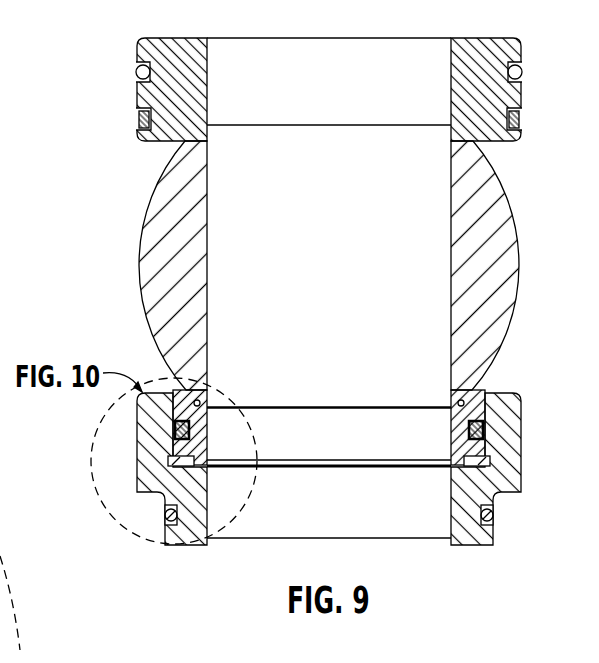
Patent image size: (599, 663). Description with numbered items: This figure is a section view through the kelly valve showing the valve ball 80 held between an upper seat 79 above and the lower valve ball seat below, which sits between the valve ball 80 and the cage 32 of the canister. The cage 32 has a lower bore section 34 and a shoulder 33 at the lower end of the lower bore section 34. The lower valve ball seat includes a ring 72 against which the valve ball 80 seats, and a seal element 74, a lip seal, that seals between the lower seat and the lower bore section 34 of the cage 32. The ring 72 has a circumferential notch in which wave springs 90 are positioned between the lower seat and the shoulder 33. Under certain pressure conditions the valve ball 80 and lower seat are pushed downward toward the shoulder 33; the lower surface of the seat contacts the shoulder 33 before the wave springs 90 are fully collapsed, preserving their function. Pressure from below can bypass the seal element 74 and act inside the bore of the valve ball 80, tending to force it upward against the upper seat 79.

The upper seat 79 is at (500, 102).
The valve ball 80 is at (508, 247).
The ring 72 is at (288, 423).
The seal element 74 is at (483, 432).
The cage 32 is at (316, 472).
The shoulder 33 is at (168, 493).
The lower bore section 34 is at (173, 400).
The wave springs 90 is at (172, 452).